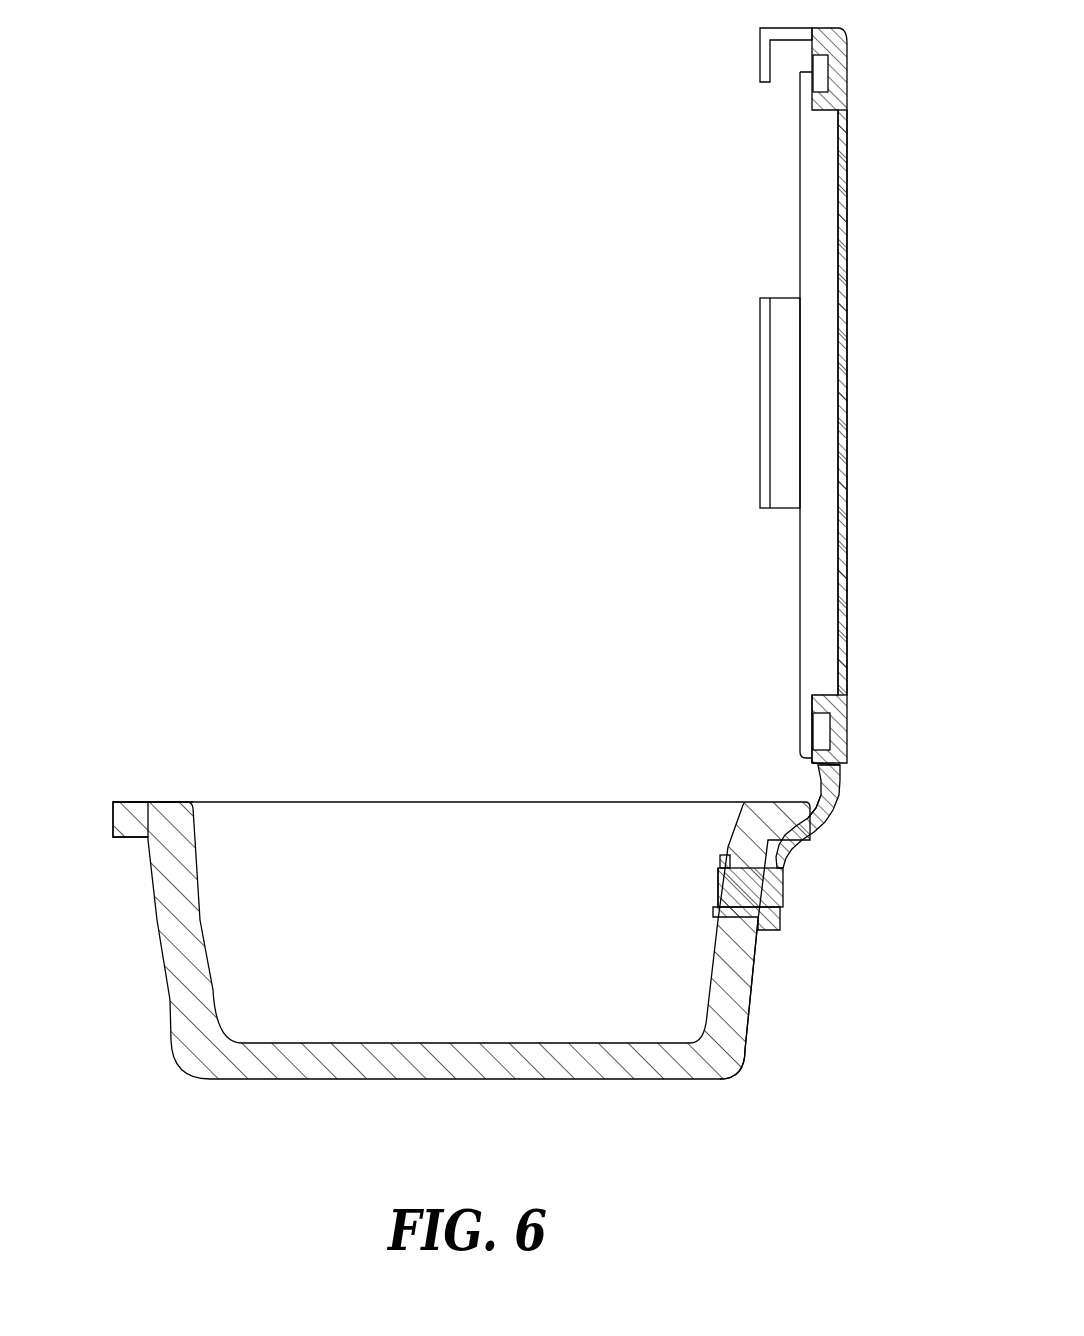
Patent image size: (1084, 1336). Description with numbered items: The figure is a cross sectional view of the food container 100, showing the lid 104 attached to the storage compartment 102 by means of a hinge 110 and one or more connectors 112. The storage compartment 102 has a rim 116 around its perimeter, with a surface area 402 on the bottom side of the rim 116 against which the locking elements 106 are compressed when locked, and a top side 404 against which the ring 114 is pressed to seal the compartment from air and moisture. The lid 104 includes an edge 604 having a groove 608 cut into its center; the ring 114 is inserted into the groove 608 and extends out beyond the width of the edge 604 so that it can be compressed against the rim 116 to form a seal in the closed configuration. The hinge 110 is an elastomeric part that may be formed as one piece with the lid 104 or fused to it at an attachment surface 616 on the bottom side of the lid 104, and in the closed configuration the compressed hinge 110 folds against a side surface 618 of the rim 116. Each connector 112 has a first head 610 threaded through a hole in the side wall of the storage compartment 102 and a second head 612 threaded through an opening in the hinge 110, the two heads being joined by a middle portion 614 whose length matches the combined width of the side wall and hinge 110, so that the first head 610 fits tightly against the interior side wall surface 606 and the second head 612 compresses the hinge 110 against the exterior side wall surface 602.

The food container 100 is at (372, 534).
The storage compartment 102 is at (717, 1043).
The lid 104 is at (828, 442).
The locking elements 106 is at (778, 350).
The hinge 110 is at (827, 823).
The connectors 112 is at (771, 891).
The ring 114 is at (805, 738).
The rim 116 is at (142, 818).
The surface area 402 is at (132, 837).
The top side 404 is at (163, 803).
The exterior side wall surface 602 is at (750, 992).
The edge 604 is at (838, 715).
The interior side wall surface 606 is at (728, 853).
The groove 608 is at (828, 77).
The first head 610 is at (718, 888).
The second head 612 is at (783, 892).
The middle portion 614 is at (748, 893).
The attachment surface 616 is at (848, 769).
The side surface 618 is at (832, 814).